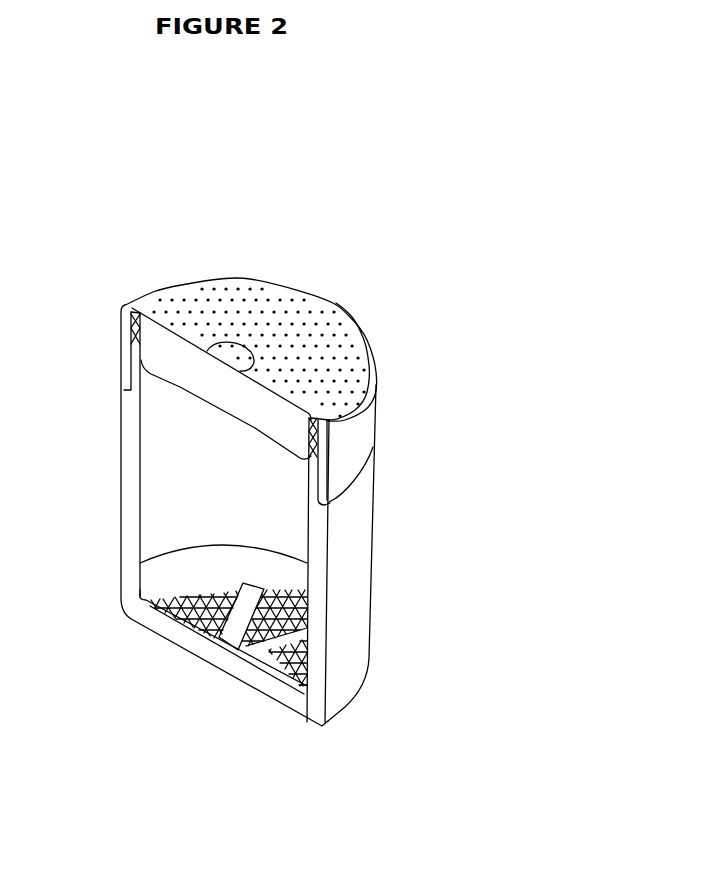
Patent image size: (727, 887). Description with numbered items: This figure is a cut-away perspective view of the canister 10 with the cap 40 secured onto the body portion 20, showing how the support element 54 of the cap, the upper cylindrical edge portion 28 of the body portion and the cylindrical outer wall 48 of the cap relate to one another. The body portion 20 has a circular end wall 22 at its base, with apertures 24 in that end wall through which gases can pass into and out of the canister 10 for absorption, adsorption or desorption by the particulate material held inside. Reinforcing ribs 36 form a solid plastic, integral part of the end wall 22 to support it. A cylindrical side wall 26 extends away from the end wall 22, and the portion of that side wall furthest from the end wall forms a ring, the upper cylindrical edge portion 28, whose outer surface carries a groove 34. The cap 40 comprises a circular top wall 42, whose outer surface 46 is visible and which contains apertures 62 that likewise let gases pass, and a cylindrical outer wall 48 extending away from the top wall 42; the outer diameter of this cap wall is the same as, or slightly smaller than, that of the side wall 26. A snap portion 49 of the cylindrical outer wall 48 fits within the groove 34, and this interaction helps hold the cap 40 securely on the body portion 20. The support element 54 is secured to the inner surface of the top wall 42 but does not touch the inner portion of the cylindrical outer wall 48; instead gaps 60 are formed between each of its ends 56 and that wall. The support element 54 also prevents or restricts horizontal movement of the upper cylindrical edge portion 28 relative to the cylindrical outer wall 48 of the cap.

The canister 10 is at (320, 490).
The body portion 20 is at (355, 592).
The circular end wall 22 is at (280, 693).
The apertures 24 is at (198, 618).
The cylindrical side wall 26 is at (320, 538).
The upper cylindrical edge portion 28 is at (320, 450).
The groove 34 is at (325, 482).
The reinforcing ribs 36 is at (237, 622).
The cap 40 is at (289, 348).
The circular top wall 42 is at (310, 296).
The outer surface 46 is at (358, 363).
The cylindrical outer wall 48 is at (133, 337).
The snap portion 49 is at (133, 350).
The support element 54 is at (200, 370).
The ends 56 is at (320, 427).
The gaps 60 is at (137, 323).
The apertures 62 is at (232, 291).